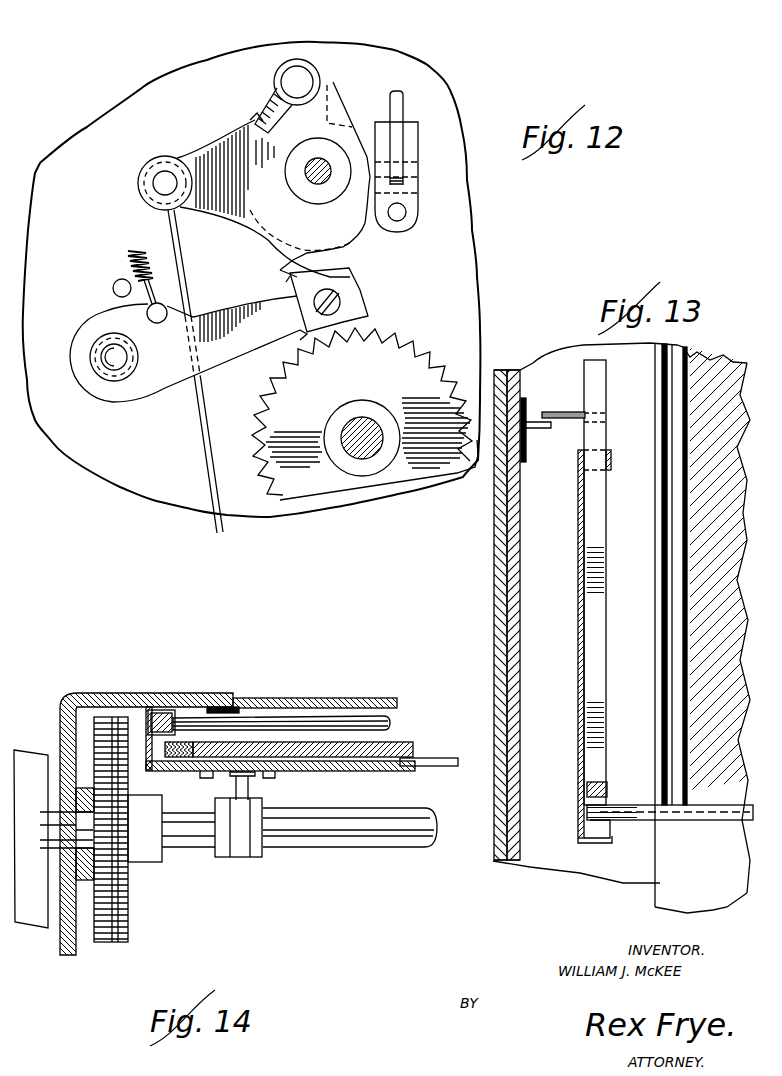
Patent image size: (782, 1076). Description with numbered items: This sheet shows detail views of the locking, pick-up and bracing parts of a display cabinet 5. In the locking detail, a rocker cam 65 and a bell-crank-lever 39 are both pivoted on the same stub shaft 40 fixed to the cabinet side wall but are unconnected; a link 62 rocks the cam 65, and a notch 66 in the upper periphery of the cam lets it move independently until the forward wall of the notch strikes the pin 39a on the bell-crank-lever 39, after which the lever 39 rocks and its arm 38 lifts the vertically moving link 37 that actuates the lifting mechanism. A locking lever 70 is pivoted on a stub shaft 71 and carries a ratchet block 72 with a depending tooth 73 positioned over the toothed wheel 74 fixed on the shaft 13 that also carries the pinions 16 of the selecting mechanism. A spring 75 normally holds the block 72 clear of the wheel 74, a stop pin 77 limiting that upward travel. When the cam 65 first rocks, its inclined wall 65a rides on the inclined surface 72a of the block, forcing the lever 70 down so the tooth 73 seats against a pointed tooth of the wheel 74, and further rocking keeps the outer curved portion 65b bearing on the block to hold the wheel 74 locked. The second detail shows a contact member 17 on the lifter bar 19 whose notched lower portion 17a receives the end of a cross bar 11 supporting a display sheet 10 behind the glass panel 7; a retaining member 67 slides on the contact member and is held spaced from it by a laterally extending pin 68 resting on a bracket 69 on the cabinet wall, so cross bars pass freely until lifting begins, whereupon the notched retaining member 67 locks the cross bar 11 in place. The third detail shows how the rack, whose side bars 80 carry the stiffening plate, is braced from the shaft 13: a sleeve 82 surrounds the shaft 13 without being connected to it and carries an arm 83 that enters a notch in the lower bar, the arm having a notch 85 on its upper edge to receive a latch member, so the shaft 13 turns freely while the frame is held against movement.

In FIG. 12, the cabinet 5 is at (478, 302).
In FIG. 13, the glass panel 7 is at (742, 358).
In FIG. 14, the glass panel 7 is at (320, 698).
In FIG. 13, the display sheet 10 is at (655, 906).
In FIG. 14, the display sheet 10 is at (392, 722).
In FIG. 13, the cross bar 11 is at (642, 817).
In FIG. 14, the shaft 13 is at (334, 838).
In FIG. 14, the pinion 16 is at (116, 940).
In FIG. 13, the contact member 17 is at (580, 781).
In FIG. 14, the contact member 17 is at (150, 698).
In FIG. 13, the notched lower portion of the contact member 17a is at (610, 841).
In FIG. 14, the lifter bar 19 is at (392, 768).
In FIG. 12, the vertically moving link 37 is at (426, 94).
In FIG. 12, the arm 38 is at (388, 232).
In FIG. 12, the bell-crank-lever 39 is at (276, 110).
In FIG. 12, the pin 39a is at (312, 70).
In FIG. 12, the stub shaft 40 is at (326, 178).
In FIG. 12, the link 62 is at (206, 437).
In FIG. 12, the rocker cam 65 is at (232, 212).
In FIG. 12, the inclined wall 65a is at (303, 257).
In FIG. 12, the outer curved portion 65b is at (270, 233).
In FIG. 12, the notch 66 is at (250, 117).
In FIG. 13, the retaining member 67 is at (598, 637).
In FIG. 14, the retaining member 67 is at (181, 698).
In FIG. 13, the laterally extending pin 68 is at (558, 412).
In FIG. 13, the bracket 69 is at (540, 427).
In FIG. 12, the locking lever 70 is at (220, 318).
In FIG. 12, the stub shaft 71 is at (114, 372).
In FIG. 12, the ratchet block 72 is at (360, 301).
In FIG. 12, the inclined surface of the ratchet block 72a is at (289, 275).
In FIG. 12, the tooth 73 is at (296, 345).
In FIG. 12, the toothed wheel 74 is at (422, 375).
In FIG. 14, the toothed wheel 74 is at (130, 931).
In FIG. 12, the spring 75 is at (128, 254).
In FIG. 12, the stop pin 77 is at (112, 292).
In FIG. 14, the side bar 80 is at (185, 742).
In FIG. 14, the sleeve 82 is at (248, 858).
In FIG. 14, the arm 83 is at (250, 787).
In FIG. 14, the notch 85 is at (283, 774).